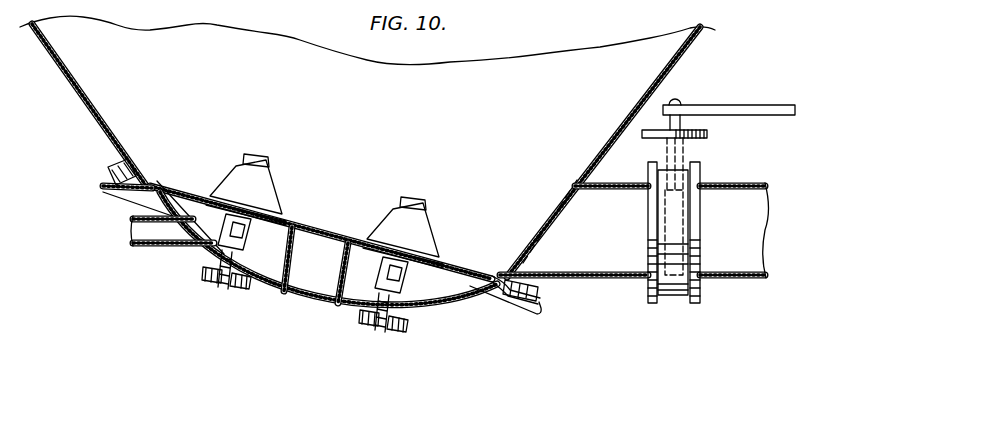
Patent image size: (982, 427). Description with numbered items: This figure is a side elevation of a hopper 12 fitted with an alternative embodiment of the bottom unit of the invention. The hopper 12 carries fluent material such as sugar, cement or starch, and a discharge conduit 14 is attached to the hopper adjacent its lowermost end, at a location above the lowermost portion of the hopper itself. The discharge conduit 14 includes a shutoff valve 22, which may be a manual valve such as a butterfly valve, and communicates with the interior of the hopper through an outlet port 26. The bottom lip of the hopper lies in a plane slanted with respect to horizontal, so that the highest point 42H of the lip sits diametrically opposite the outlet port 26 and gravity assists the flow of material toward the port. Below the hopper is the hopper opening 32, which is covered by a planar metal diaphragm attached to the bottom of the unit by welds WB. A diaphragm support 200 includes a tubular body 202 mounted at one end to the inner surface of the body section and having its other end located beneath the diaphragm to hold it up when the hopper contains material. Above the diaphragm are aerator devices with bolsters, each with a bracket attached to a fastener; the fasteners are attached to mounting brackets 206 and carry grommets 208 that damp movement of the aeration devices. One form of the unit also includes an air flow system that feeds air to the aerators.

The hopper 12 is at (82, 73).
The discharge conduit 14 is at (616, 286).
The shutoff valve 22 is at (736, 88).
The outlet port 26 is at (550, 218).
The hopper opening 32 is at (161, 183).
The highest point of the hopper lip 42H is at (147, 173).
The tubular body 202 is at (290, 265).
The diaphragm support 200 is at (348, 288).
The mounting bracket 206 is at (205, 265).
The grommet 208 is at (240, 289).
The welds WB is at (478, 277).